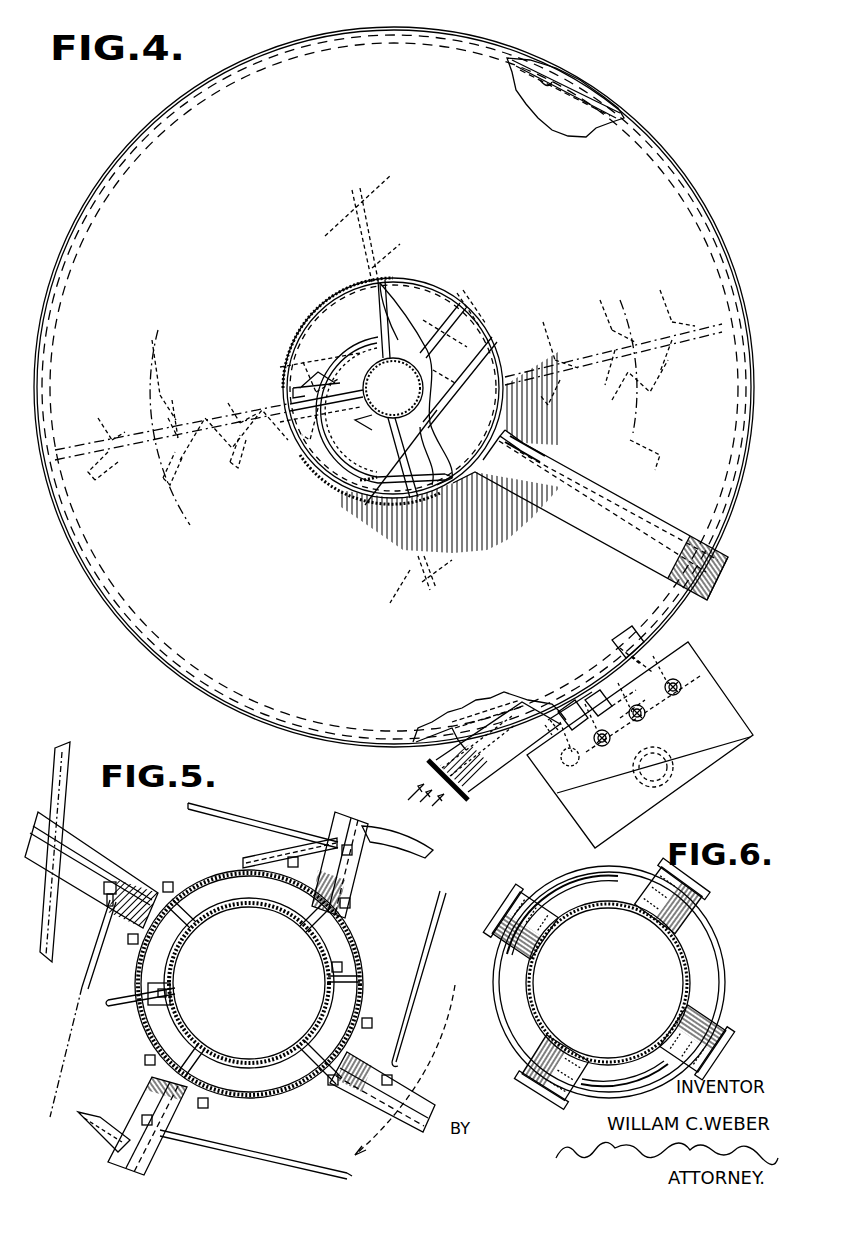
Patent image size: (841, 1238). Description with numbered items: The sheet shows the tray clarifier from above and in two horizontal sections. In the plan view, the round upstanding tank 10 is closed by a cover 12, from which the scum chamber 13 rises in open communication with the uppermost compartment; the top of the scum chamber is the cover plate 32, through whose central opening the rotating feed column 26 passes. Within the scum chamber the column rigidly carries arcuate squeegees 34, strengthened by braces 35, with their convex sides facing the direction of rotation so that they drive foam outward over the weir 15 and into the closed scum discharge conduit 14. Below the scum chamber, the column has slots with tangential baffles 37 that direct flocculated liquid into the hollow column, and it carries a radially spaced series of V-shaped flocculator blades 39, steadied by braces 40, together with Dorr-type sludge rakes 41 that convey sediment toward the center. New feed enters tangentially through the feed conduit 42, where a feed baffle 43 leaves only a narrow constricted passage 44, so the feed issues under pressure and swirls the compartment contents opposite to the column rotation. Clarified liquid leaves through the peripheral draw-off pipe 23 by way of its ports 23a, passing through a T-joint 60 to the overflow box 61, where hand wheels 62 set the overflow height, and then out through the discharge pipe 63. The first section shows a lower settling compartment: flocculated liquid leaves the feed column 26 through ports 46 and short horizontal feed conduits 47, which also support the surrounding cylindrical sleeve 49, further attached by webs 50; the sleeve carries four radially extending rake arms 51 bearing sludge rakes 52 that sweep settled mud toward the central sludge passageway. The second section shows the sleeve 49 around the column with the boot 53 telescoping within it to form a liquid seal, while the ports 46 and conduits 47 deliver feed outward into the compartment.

In FIG. 4, the tank 10 is at (122, 156).
In FIG. 4, the cover 12 is at (394, 387).
In FIG. 4, the scum chamber 13 is at (330, 478).
In FIG. 4, the scum discharge conduit 14 is at (572, 508).
In FIG. 4, the weir 15 is at (490, 447).
In FIG. 4, the draw-off pipe 23 is at (248, 702).
In FIG. 4, the ports 23a is at (540, 80).
In FIG. 4, the feed column 26 is at (420, 383).
In FIG. 5, the feed column 26 is at (182, 965).
In FIG. 6, the feed column 26 is at (688, 970).
In FIG. 4, the cover plate 32 is at (440, 295).
In FIG. 4, the squeegees 34 is at (318, 357).
In FIG. 4, the braces 35 is at (312, 374).
In FIG. 4, the tangential baffles 37 is at (370, 432).
In FIG. 4, the flocculator blades 39 is at (196, 408).
In FIG. 4, the braces 40 is at (245, 440).
In FIG. 4, the sludge rakes 41 is at (210, 470).
In FIG. 4, the feed conduit 42 is at (474, 772).
In FIG. 4, the feed baffle 43 is at (472, 722).
In FIG. 4, the constricted passage 44 is at (560, 702).
In FIG. 6, the ports 46 is at (658, 914).
In FIG. 6, the feed conduits 47 is at (698, 906).
In FIG. 5, the cylindrical sleeve 49 is at (200, 878).
In FIG. 6, the cylindrical sleeve 49 is at (726, 982).
In FIG. 5, the webs 50 is at (195, 926).
In FIG. 5, the rake arms 51 is at (136, 870).
In FIG. 5, the sludge rakes 52 is at (58, 815).
In FIG. 6, the boot 53 is at (585, 904).
In FIG. 4, the T-joint 60 is at (628, 640).
In FIG. 4, the overflow box 61 is at (700, 670).
In FIG. 4, the hand wheels 62 is at (676, 698).
In FIG. 4, the discharge pipe 63 is at (676, 782).